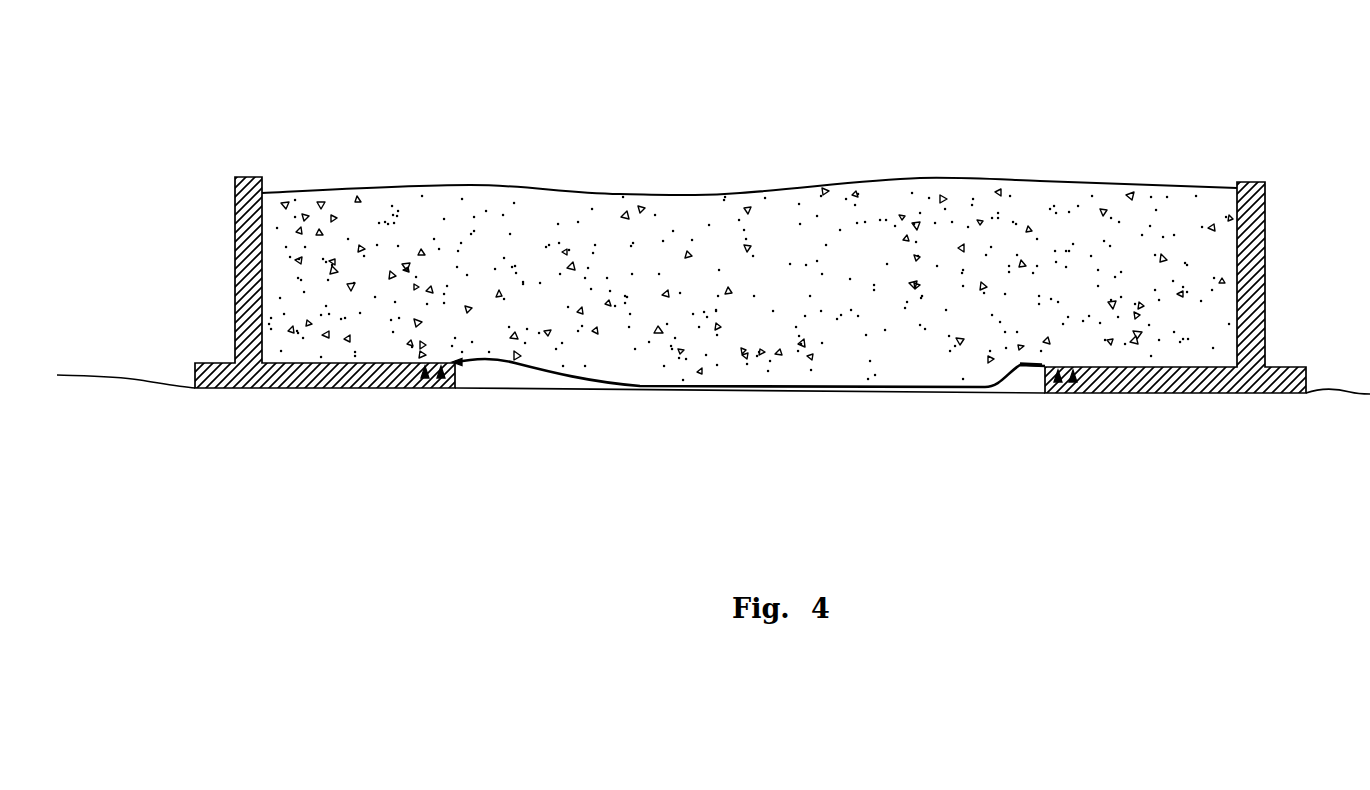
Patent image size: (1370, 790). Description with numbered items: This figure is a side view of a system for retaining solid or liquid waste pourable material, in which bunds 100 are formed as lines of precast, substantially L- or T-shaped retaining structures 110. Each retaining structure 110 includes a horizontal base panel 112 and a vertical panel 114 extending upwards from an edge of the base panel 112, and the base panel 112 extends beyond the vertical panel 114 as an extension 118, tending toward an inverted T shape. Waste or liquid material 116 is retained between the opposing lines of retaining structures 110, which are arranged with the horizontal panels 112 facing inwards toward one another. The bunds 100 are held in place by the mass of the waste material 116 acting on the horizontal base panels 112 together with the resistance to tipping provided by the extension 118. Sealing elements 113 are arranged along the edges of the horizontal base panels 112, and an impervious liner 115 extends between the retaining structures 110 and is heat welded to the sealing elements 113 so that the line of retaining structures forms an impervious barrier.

The bund 100 is at (211, 142).
The retaining structure 110 is at (252, 306).
The horizontal base panel 112 is at (347, 397).
The sealing element 113 is at (434, 346).
The vertical panel 114 is at (237, 252).
The impervious liner 115 is at (738, 391).
The waste or liquid material 116 is at (661, 185).
The extension 118 is at (167, 347).